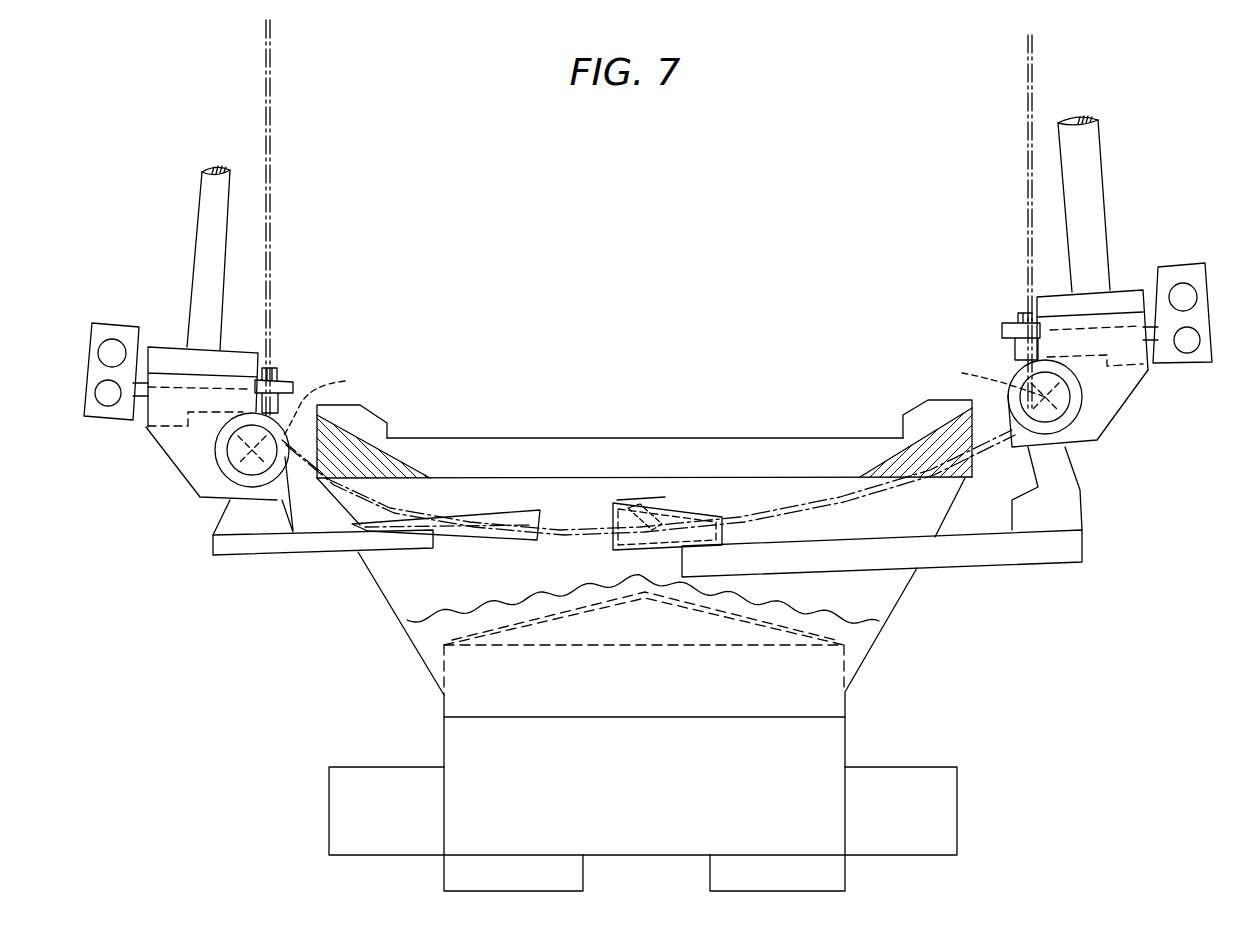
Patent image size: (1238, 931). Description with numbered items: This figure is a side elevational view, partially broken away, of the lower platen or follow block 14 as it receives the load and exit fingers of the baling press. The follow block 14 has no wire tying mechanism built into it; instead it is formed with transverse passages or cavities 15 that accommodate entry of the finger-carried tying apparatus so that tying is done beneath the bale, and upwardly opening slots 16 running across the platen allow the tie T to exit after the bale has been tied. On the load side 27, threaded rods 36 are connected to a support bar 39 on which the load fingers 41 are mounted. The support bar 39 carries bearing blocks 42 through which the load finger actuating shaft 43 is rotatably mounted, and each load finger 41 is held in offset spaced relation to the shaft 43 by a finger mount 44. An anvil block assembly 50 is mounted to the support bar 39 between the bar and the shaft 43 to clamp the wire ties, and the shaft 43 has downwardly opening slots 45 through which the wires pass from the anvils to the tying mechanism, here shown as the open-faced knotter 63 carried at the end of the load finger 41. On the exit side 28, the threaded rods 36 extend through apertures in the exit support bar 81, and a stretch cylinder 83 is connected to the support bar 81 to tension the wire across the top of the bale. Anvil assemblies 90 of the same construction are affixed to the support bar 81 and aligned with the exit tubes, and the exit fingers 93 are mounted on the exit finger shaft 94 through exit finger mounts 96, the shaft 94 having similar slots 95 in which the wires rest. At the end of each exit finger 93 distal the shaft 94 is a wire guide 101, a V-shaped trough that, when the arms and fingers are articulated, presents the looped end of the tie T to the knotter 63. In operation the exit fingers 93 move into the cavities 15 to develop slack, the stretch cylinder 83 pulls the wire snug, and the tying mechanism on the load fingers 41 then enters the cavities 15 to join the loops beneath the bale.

The follow block 14 is at (446, 430).
The passages 15 is at (410, 604).
The upwardly opening slots 16 is at (824, 446).
The load side 27 is at (1122, 208).
The exit side 28 is at (192, 252).
The threaded rods 36 is at (1095, 172).
The support bar 39 is at (1128, 297).
The load fingers 41 is at (990, 562).
The bearing blocks 42 is at (1127, 378).
The load finger actuating shaft 43 is at (1057, 408).
The finger mount 44 is at (1067, 495).
The downwardly opening slots 45 is at (984, 377).
The anvil block assembly 50 is at (1000, 331).
The knotter 63 is at (684, 499).
The support bar 81 is at (168, 350).
The stretch cylinder 83 is at (205, 220).
The anvil assemblies 90 is at (298, 382).
The exit fingers 93 is at (305, 560).
The exit finger shaft 94 is at (248, 456).
The slots 95 is at (331, 400).
The exit finger mounts 96 is at (226, 518).
The wire guide 101 is at (525, 524).
The tie T is at (270, 185).